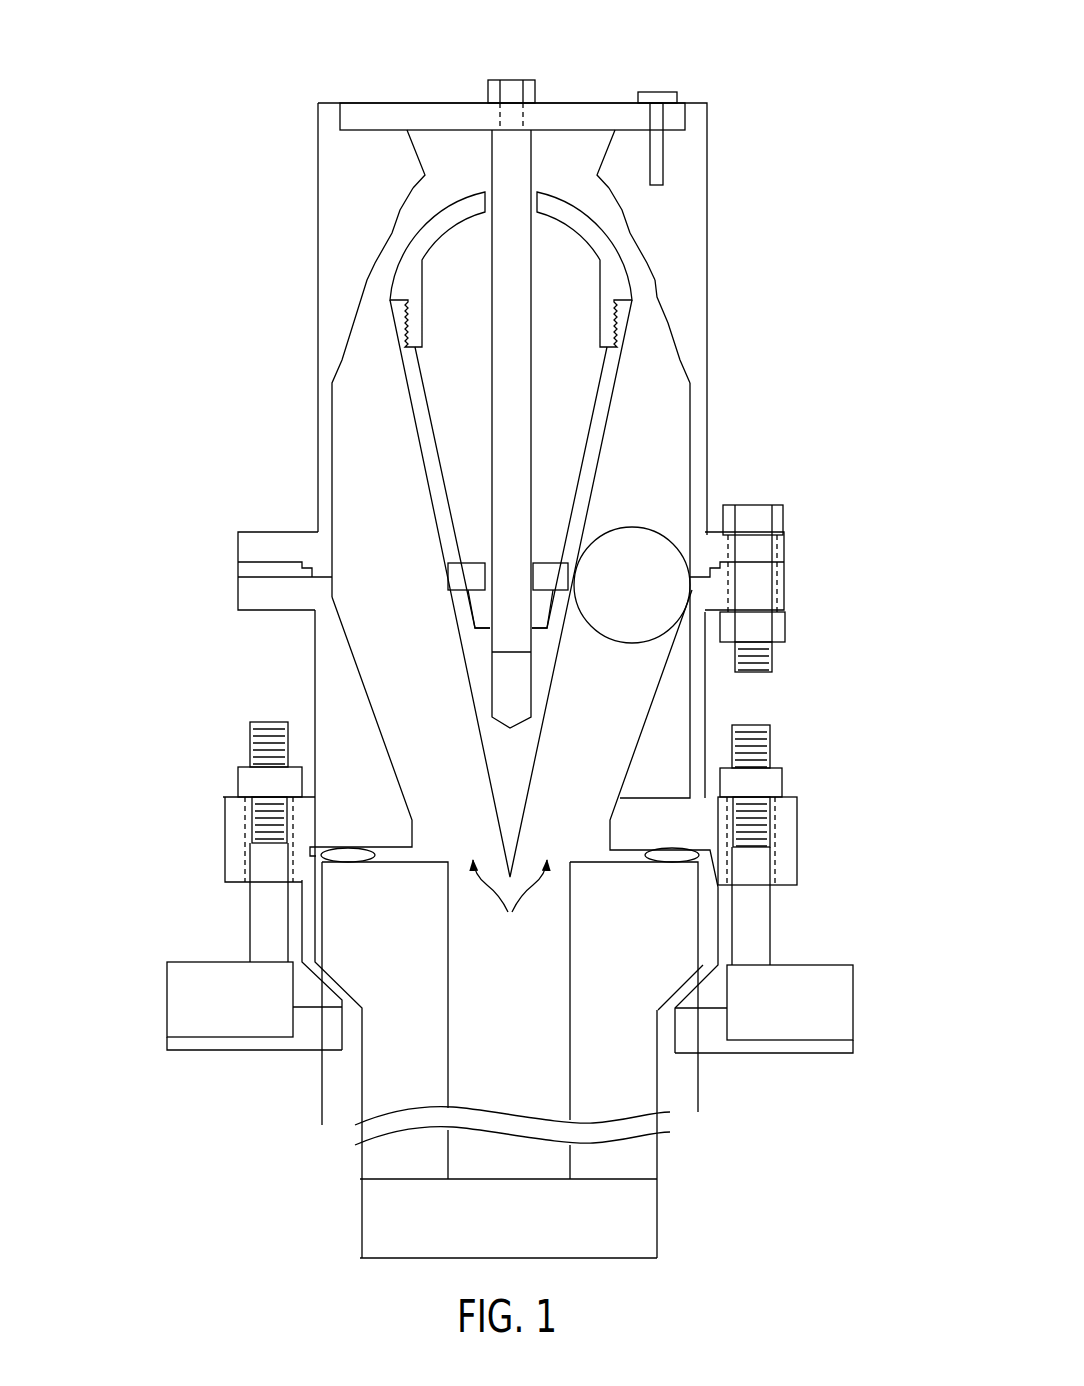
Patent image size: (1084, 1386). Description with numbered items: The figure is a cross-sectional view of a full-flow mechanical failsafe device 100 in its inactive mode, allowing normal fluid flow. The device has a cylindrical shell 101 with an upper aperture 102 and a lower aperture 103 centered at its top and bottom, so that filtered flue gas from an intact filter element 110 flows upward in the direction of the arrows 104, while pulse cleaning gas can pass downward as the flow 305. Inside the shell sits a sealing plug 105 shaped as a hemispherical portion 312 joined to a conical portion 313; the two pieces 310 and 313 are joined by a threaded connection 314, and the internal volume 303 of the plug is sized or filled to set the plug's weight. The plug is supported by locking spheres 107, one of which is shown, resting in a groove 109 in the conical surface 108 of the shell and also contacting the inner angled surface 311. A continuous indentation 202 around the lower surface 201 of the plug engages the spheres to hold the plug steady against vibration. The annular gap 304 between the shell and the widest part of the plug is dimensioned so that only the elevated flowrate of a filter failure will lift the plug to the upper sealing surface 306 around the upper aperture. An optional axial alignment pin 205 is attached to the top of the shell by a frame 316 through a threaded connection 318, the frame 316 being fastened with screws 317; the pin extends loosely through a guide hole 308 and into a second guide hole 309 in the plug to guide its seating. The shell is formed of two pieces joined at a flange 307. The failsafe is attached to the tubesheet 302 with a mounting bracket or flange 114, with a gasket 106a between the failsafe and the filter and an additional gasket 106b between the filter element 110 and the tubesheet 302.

The mechanical failsafe device 100 is at (312, 213).
The cylindrical shell 101 is at (707, 455).
The upper aperture 102 is at (447, 166).
The lower aperture 103 is at (440, 841).
The flow direction arrows 104 is at (510, 902).
The sealing plug 105 is at (603, 418).
The gasket 106a is at (349, 866).
The additional gasket 106b is at (325, 991).
The locking sphere 107 is at (645, 565).
The conical surface 108 is at (353, 681).
The groove 109 is at (675, 712).
The filter element 110 is at (640, 1227).
The mounting bracket or flange 114 is at (790, 854).
The lower surface of the sealing plug 201 is at (553, 701).
The continuous indentation 202 is at (446, 575).
The axial alignment pin 205 is at (508, 380).
The tubesheet 302 is at (205, 997).
The internal volume 303 is at (553, 482).
The annular gap 304 is at (368, 295).
The flow 305 is at (436, 192).
The upper sealing surface 306 is at (612, 194).
The flange 307 is at (713, 558).
The guide hole 308 is at (480, 205).
The second guide hole 309 is at (488, 644).
The hemispherical piece 310 is at (610, 224).
The inner angled surface 311 is at (336, 586).
The hemispherical portion 312 is at (622, 267).
The conical portion 313 is at (617, 361).
The threaded connection 314 is at (626, 320).
The frame 316 is at (570, 120).
The screws 317 is at (690, 96).
The threaded connection 318 is at (528, 74).